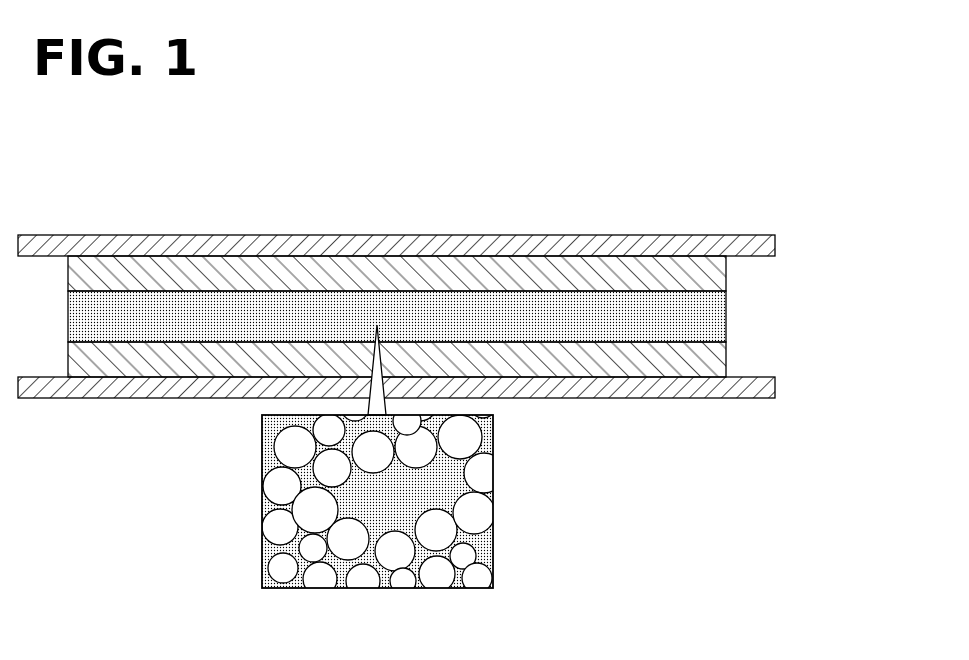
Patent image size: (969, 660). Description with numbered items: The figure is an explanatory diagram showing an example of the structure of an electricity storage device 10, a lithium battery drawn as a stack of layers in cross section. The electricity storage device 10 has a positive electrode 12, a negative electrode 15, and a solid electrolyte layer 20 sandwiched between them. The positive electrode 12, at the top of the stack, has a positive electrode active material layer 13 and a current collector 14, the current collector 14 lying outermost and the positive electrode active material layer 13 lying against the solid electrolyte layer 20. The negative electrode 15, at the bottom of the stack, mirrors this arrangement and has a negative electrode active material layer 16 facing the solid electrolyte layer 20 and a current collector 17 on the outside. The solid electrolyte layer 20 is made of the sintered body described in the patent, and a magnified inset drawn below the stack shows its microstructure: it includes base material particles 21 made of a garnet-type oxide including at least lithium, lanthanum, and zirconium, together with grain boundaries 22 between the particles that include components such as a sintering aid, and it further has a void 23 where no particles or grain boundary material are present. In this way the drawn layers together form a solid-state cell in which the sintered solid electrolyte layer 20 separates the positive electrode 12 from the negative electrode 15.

The electricity storage device 10 is at (461, 290).
The positive electrode 12 is at (461, 257).
The positive electrode active material layer 13 is at (718, 279).
The current collector 14 is at (765, 246).
The negative electrode 15 is at (461, 374).
The negative electrode active material layer 16 is at (712, 355).
The current collector 17 is at (765, 385).
The solid electrolyte layer 20 is at (718, 315).
The base material particles 21 is at (482, 470).
The grain boundaries 22 is at (453, 550).
The void 23 is at (410, 508).